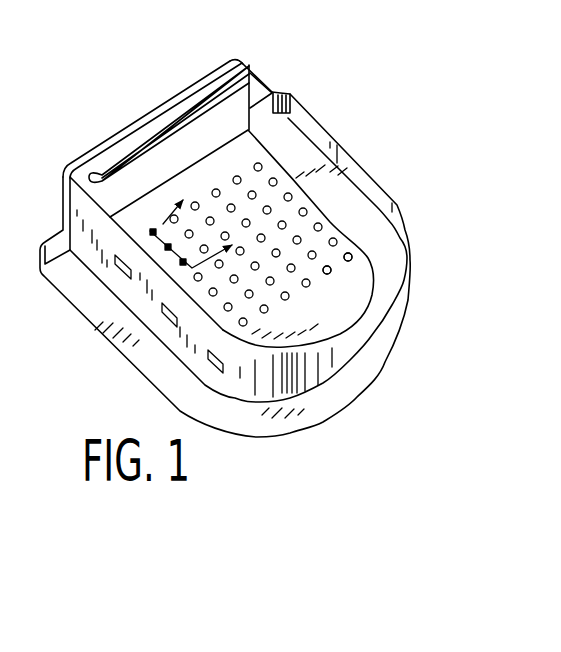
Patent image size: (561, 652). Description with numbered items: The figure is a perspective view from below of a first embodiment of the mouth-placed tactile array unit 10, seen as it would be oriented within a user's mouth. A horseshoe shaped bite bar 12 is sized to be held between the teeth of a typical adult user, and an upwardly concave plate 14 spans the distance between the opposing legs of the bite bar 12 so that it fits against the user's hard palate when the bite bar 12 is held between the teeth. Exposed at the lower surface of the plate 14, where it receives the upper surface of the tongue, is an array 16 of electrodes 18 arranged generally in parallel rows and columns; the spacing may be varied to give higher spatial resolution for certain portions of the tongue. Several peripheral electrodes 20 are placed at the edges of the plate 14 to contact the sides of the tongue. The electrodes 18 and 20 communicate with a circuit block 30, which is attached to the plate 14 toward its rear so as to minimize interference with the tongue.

The mouth-placed tactile array unit 10 is at (364, 72).
The bite bar 12 is at (379, 183).
The concave plate 14 is at (233, 60).
The array 16 is at (297, 310).
The electrodes 18 is at (332, 274).
The peripheral electrodes 20 is at (215, 372).
The circuit block 30 is at (132, 148).